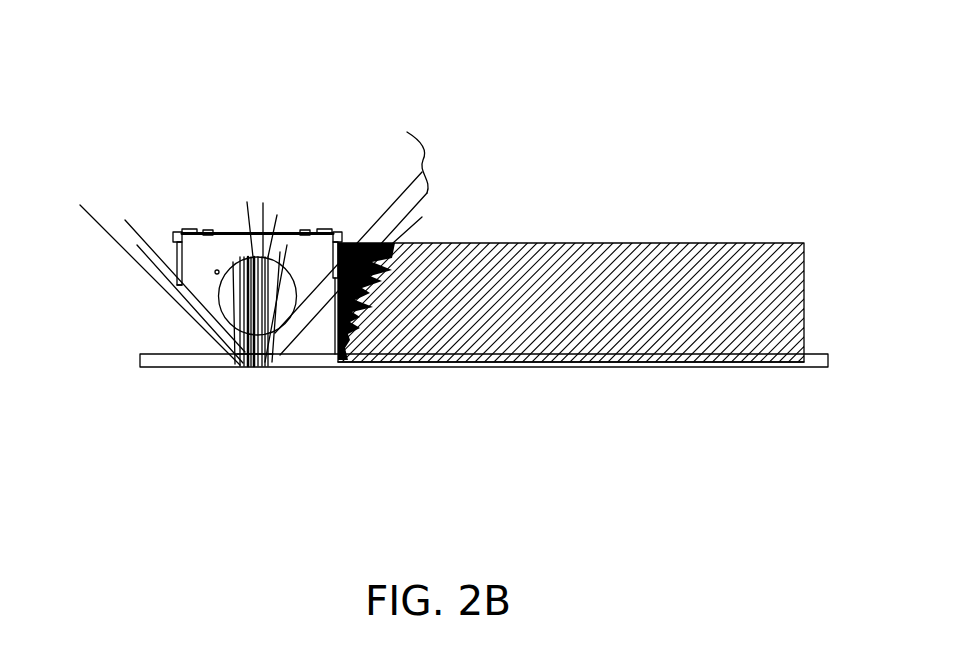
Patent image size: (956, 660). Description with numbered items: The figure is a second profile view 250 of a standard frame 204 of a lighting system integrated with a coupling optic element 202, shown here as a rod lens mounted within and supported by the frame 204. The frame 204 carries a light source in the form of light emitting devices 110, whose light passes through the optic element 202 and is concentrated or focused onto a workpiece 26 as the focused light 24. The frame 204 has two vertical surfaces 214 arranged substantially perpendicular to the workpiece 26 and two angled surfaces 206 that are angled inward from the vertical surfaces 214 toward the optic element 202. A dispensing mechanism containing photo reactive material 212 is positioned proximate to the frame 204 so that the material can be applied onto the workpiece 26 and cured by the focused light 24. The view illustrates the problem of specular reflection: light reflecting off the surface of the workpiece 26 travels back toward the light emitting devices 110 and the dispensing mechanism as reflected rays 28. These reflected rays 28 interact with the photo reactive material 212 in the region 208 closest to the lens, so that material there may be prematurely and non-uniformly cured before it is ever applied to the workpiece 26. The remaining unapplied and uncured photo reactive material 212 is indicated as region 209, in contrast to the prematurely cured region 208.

The light focused by the optic element 24 is at (237, 338).
The workpiece 26 is at (140, 363).
The reflected light rays 28 is at (105, 230).
The light emitting devices 110 is at (290, 247).
The optic element 202 is at (284, 312).
The frame 204 is at (203, 255).
The angled surfaces 206 is at (188, 292).
The region of prematurely cured photo reactive material 208 is at (344, 340).
The region of unapplied and uncured photo reactive material 209 is at (503, 327).
The photo reactive material 212 is at (657, 222).
The vertical surfaces 214 is at (182, 255).
The second profile view 250 is at (760, 42).